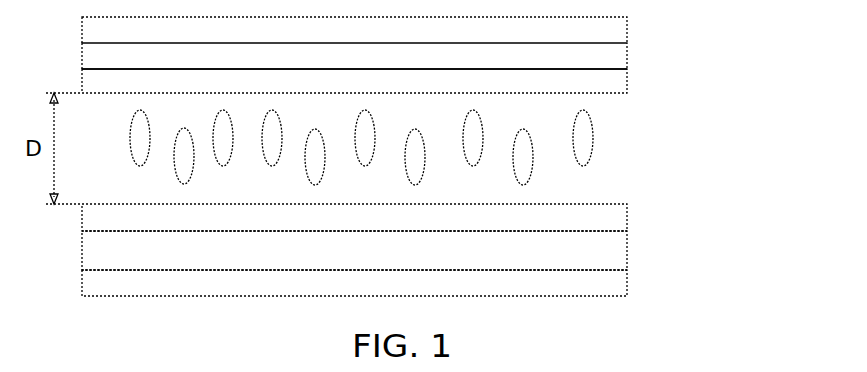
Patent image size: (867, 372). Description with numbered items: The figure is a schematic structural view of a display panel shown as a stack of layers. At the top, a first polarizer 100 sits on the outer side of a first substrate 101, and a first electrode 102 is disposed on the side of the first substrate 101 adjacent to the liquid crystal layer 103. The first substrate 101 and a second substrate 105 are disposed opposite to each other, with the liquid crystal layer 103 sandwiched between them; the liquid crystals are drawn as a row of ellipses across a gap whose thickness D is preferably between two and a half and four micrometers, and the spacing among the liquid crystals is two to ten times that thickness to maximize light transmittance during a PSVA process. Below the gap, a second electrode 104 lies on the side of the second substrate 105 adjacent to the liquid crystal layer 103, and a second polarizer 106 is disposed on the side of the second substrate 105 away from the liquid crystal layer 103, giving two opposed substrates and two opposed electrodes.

The first polarizer 100 is at (627, 30).
The first substrate 101 is at (627, 57).
The first electrode 102 is at (627, 84).
The liquid crystal layer 103 is at (593, 148).
The second electrode 104 is at (627, 215).
The second substrate 105 is at (627, 253).
The second polarizer 106 is at (627, 290).